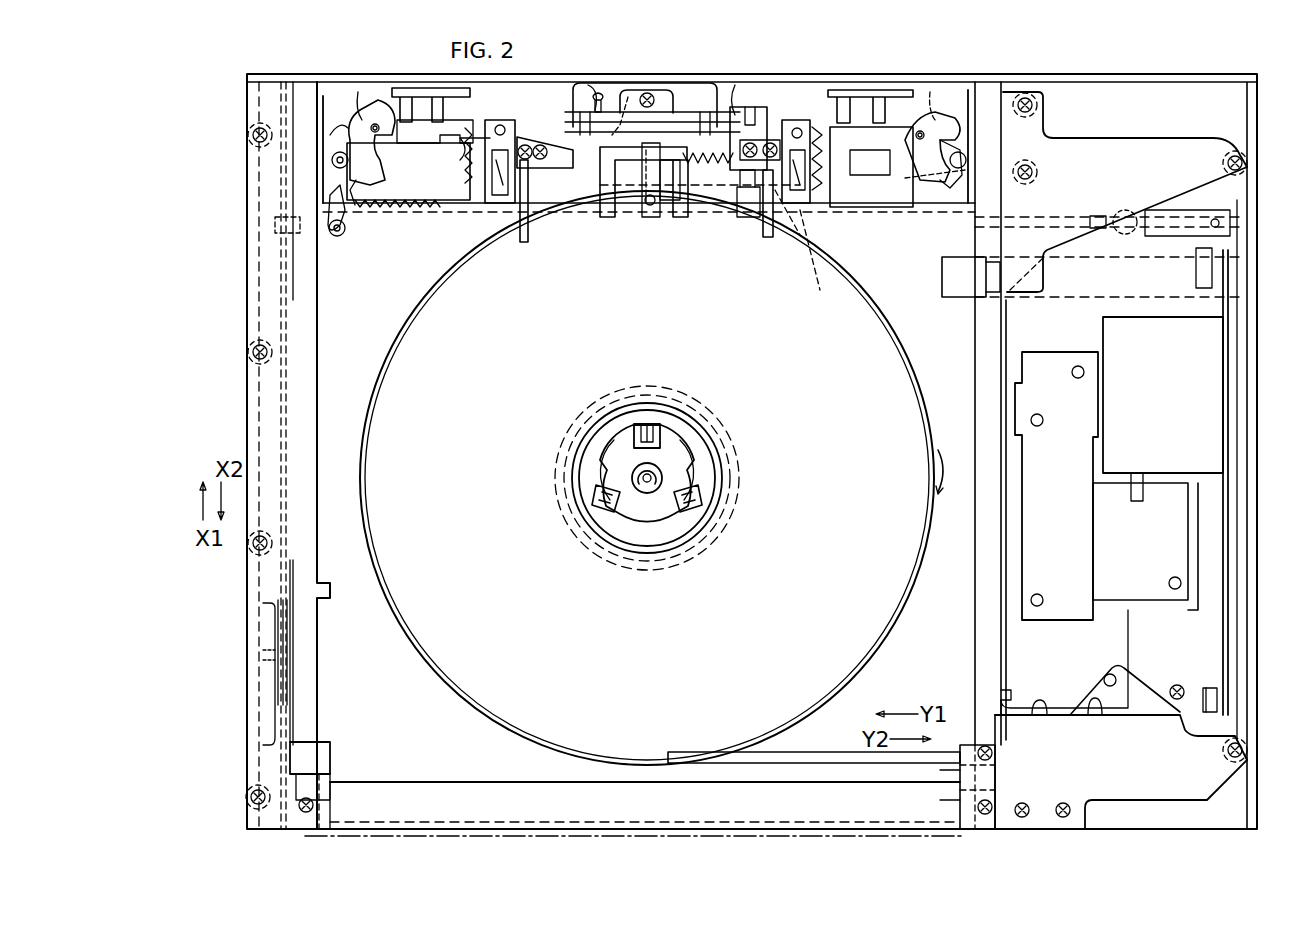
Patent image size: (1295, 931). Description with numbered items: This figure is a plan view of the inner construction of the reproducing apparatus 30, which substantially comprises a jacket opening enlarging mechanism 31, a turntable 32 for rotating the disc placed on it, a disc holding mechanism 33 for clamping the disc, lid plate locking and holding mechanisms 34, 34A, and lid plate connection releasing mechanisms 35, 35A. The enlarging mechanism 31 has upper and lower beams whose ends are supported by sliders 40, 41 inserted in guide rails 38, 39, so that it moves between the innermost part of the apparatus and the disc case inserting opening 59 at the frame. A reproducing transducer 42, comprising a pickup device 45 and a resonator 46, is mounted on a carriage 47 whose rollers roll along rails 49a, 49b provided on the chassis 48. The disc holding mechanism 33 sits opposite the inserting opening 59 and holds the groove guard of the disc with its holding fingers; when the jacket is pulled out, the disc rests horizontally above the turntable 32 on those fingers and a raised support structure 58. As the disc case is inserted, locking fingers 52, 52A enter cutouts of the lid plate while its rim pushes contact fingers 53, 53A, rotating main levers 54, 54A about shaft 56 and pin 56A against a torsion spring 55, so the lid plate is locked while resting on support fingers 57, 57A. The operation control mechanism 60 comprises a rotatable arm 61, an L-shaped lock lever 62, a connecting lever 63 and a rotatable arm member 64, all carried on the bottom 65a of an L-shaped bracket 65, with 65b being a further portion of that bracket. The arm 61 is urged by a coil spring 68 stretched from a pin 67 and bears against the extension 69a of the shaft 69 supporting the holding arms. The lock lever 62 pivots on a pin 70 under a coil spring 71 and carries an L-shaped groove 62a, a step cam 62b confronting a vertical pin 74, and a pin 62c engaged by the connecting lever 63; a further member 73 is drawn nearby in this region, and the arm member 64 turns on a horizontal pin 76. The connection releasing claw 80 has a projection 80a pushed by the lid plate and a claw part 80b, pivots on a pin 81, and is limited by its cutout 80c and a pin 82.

The reproducing apparatus 30 is at (1108, 68).
The jacket opening enlarging mechanism 31 is at (425, 779).
The turntable 32 is at (872, 640).
The disc holding mechanism 33 is at (610, 234).
The lid plate locking and holding mechanism 34 is at (500, 212).
The lid plate locking and holding mechanism 34A is at (820, 215).
The lid plate connection releasing mechanism 35 is at (345, 140).
The lid plate connection releasing mechanism 35A is at (1000, 200).
The guide rail 38 is at (298, 419).
The guide rail 39 is at (992, 546).
The supporting member (slider) 40 is at (296, 766).
The supporting member (slider) 41 is at (985, 780).
The reproducing transducer 42 is at (1068, 636).
The pickup device 45 is at (1020, 570).
The resonator 46 is at (1120, 598).
The carriage 47 is at (1240, 383).
The chassis 48 is at (330, 666).
The rail 49a is at (915, 285).
The rail 49b is at (830, 752).
The locking finger 52 is at (508, 215).
The locking finger 52A is at (834, 262).
The contact finger 53 is at (478, 175).
The contact finger 53A is at (852, 190).
The main lever 54 is at (438, 188).
The main lever 54A is at (928, 200).
The torsion spring 55 is at (968, 128).
The shaft 56 is at (330, 163).
The pin (shaft) 56A is at (985, 143).
The support finger 57 is at (536, 225).
The support finger 57A is at (785, 240).
The support structure 58 is at (705, 478).
The disc case inserting opening 59 is at (830, 838).
The operation control mechanism 60 is at (702, 232).
The rotatable arm 61 is at (748, 105).
The L-shaped lock lever 62 is at (668, 205).
The L-shaped groove 62a is at (600, 165).
The step cam 62b is at (628, 90).
The pin 62c is at (768, 240).
The connecting lever 63 is at (812, 270).
The rotatable arm member 64 is at (778, 122).
The L-shaped bracket 65 is at (898, 212).
The bottom of the L-shaped bracket 65a is at (935, 200).
The plate portion 65b is at (835, 85).
The pin 67 is at (748, 215).
The coil spring 68 is at (647, 99).
The shaft 69 is at (592, 84).
The extension of the shaft 69a is at (733, 84).
The pin 70 is at (650, 208).
The coil spring 71 is at (738, 200).
The arm 73 is at (640, 200).
The vertical pin 74 is at (680, 83).
The horizontal pin 76 is at (775, 105).
The connection releasing claw 80 is at (372, 112).
The projection 80a is at (630, 163).
The claw part 80b is at (1003, 196).
The cutout 80c is at (355, 90).
The pin 81 is at (375, 132).
The pin 82 is at (323, 128).